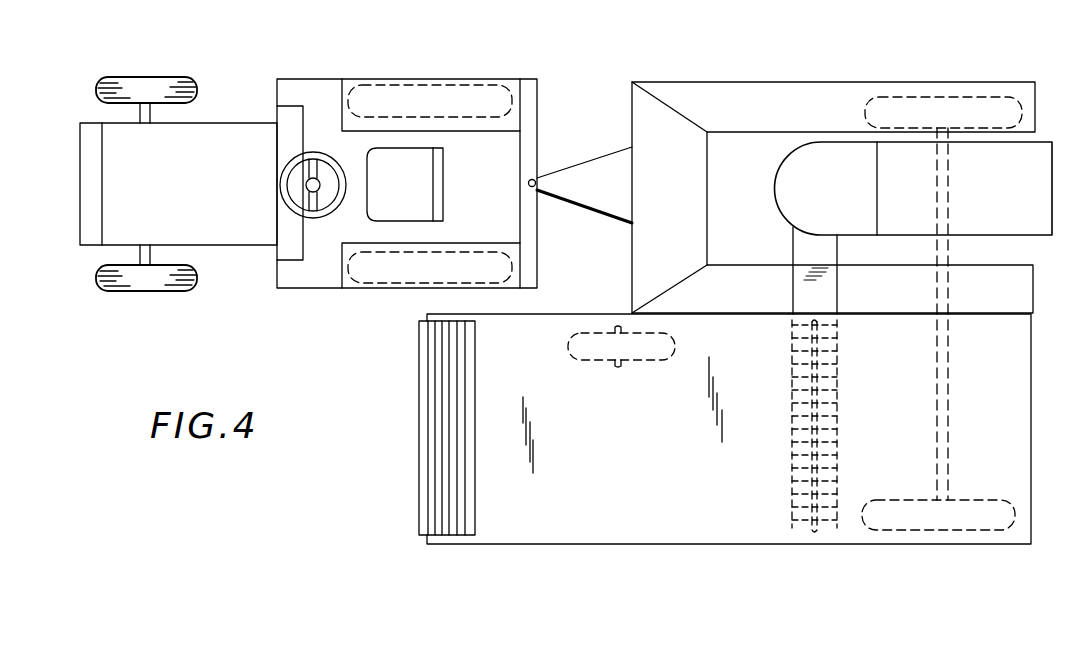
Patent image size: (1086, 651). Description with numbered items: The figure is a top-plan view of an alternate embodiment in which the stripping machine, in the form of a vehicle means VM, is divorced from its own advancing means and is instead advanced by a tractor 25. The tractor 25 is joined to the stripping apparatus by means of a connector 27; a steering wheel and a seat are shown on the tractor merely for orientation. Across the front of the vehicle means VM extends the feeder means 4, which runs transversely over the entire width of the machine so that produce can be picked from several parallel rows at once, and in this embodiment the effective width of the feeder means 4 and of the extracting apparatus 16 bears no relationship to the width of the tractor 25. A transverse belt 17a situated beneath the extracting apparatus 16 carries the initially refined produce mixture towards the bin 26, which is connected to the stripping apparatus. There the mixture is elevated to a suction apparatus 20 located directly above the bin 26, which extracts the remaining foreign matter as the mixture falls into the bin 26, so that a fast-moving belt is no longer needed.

The tractor 25 is at (357, 36).
The connector 27 is at (578, 177).
The bin 26 is at (748, 205).
The suction apparatus 20 is at (848, 191).
The vehicle means VM is at (405, 403).
The feeder means 4 is at (414, 494).
The extracting apparatus 16 is at (790, 477).
The transverse belt 17a is at (820, 443).